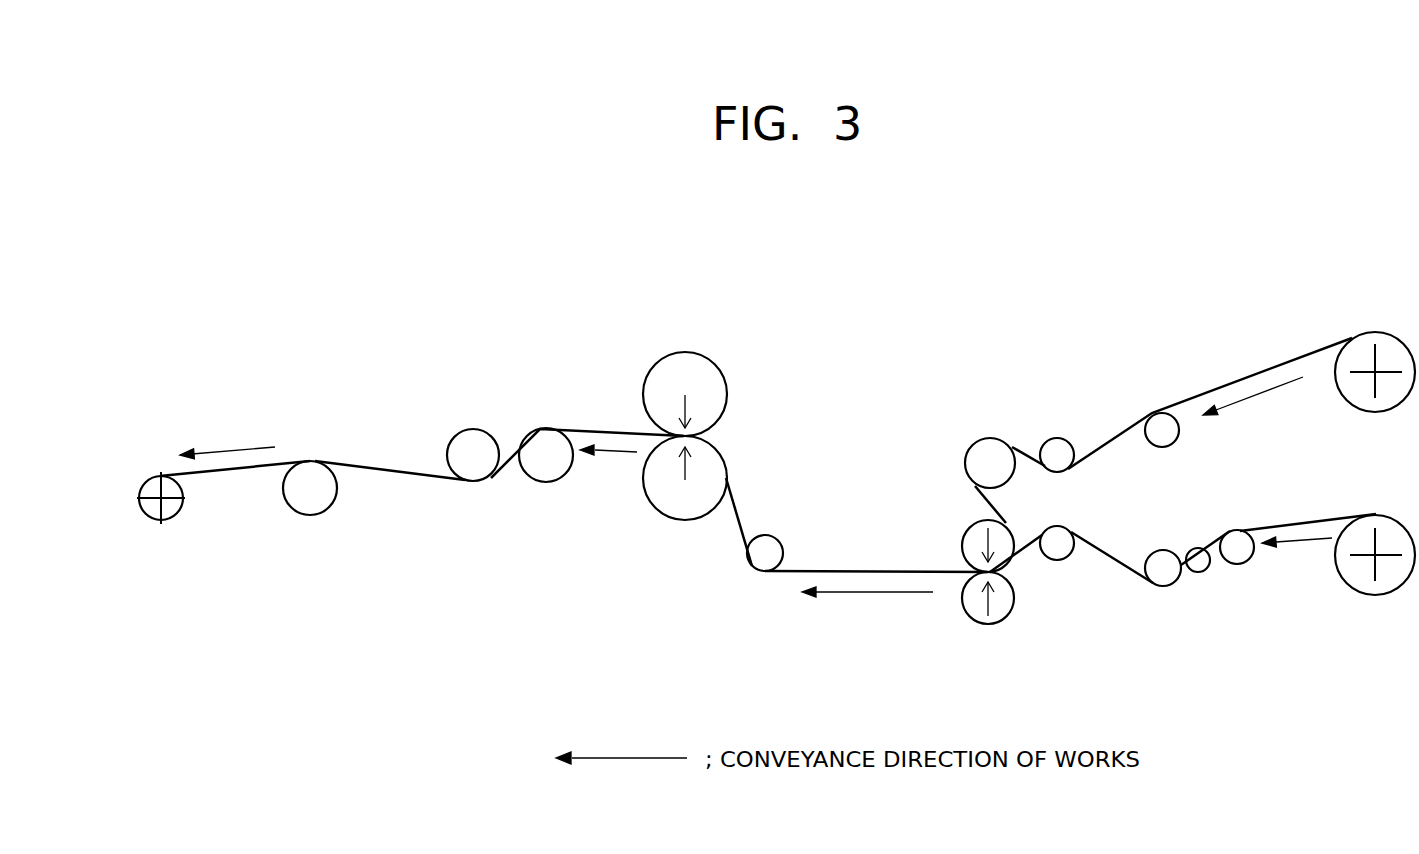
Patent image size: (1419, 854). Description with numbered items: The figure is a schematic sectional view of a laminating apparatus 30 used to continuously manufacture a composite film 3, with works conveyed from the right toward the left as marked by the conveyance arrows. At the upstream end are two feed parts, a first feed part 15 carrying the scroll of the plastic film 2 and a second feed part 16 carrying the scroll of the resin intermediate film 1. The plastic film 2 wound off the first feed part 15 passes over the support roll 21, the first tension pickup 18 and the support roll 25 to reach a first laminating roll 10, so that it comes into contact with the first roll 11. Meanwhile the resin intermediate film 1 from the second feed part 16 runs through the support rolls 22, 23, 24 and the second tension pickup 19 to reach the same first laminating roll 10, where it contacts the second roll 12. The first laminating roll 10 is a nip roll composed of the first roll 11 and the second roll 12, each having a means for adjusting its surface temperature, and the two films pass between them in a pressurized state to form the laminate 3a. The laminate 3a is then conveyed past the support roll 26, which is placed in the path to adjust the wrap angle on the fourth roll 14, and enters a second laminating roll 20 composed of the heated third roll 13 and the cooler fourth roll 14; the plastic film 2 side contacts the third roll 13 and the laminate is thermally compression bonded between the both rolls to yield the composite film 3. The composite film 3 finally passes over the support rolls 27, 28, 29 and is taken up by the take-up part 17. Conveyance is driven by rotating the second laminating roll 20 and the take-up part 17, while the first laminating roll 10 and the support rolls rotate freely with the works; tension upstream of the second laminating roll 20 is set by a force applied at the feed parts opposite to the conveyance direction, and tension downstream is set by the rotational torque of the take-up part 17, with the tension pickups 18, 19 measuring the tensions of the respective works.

The resin intermediate film 1 is at (1290, 522).
The plastic film 2 is at (1243, 378).
The composite film 3 is at (613, 428).
The laminate 3a is at (852, 570).
The first laminating roll 10 is at (958, 594).
The first roll 11 is at (962, 545).
The second roll 12 is at (990, 625).
The third roll 13 is at (685, 352).
The fourth roll 14 is at (685, 520).
The first feed part 15 is at (1378, 333).
The second feed part 16 is at (1378, 595).
The take-up part 17 is at (158, 521).
The first tension pickup 18 is at (1058, 438).
The second tension pickup 19 is at (1060, 560).
The second laminating roll 20 is at (712, 437).
The support roll 21 is at (1170, 447).
The support roll 22 is at (1250, 560).
The support roll 23 is at (1200, 572).
The support roll 24 is at (1163, 586).
The support roll 25 is at (965, 463).
The support roll 26 is at (760, 571).
The support roll 27 is at (546, 483).
The support roll 28 is at (473, 482).
The support roll 29 is at (310, 516).
The laminating apparatus 30 is at (210, 300).